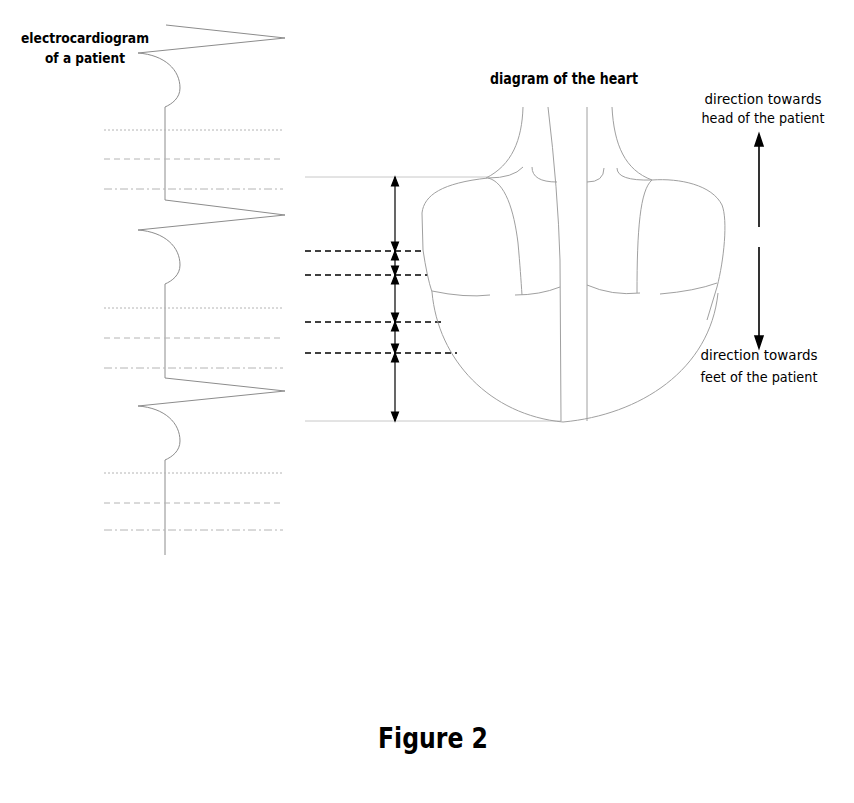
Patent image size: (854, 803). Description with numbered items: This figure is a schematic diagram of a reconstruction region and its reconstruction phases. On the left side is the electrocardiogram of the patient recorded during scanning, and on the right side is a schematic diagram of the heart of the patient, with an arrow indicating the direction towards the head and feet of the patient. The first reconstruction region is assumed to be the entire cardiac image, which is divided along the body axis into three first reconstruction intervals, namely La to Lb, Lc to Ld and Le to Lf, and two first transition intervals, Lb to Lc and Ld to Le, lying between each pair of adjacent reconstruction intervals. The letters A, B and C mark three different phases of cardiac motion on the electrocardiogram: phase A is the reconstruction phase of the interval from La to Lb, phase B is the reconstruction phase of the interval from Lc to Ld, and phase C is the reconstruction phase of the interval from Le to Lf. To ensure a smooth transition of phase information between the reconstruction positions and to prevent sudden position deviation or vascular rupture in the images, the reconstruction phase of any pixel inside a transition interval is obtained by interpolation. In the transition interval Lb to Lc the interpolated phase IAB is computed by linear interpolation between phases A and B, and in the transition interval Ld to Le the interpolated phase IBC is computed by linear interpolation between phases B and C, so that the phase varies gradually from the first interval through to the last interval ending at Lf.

The reconstruction phase A is at (247, 302).
The reconstruction phase B is at (247, 331).
The reconstruction phase C is at (247, 360).
The reconstruction position La is at (387, 176).
The reconstruction position Lb is at (356, 250).
The reconstruction position Lc is at (357, 274).
The reconstruction position Ld is at (365, 321).
The reconstruction position Le is at (372, 352).
The reconstruction position Lf is at (424, 420).
The interpolated reconstruction phase of the transition interval Lb to Lc IAB is at (372, 265).
The interpolated reconstruction phase of the transition interval Ld to Le IBC is at (372, 339).